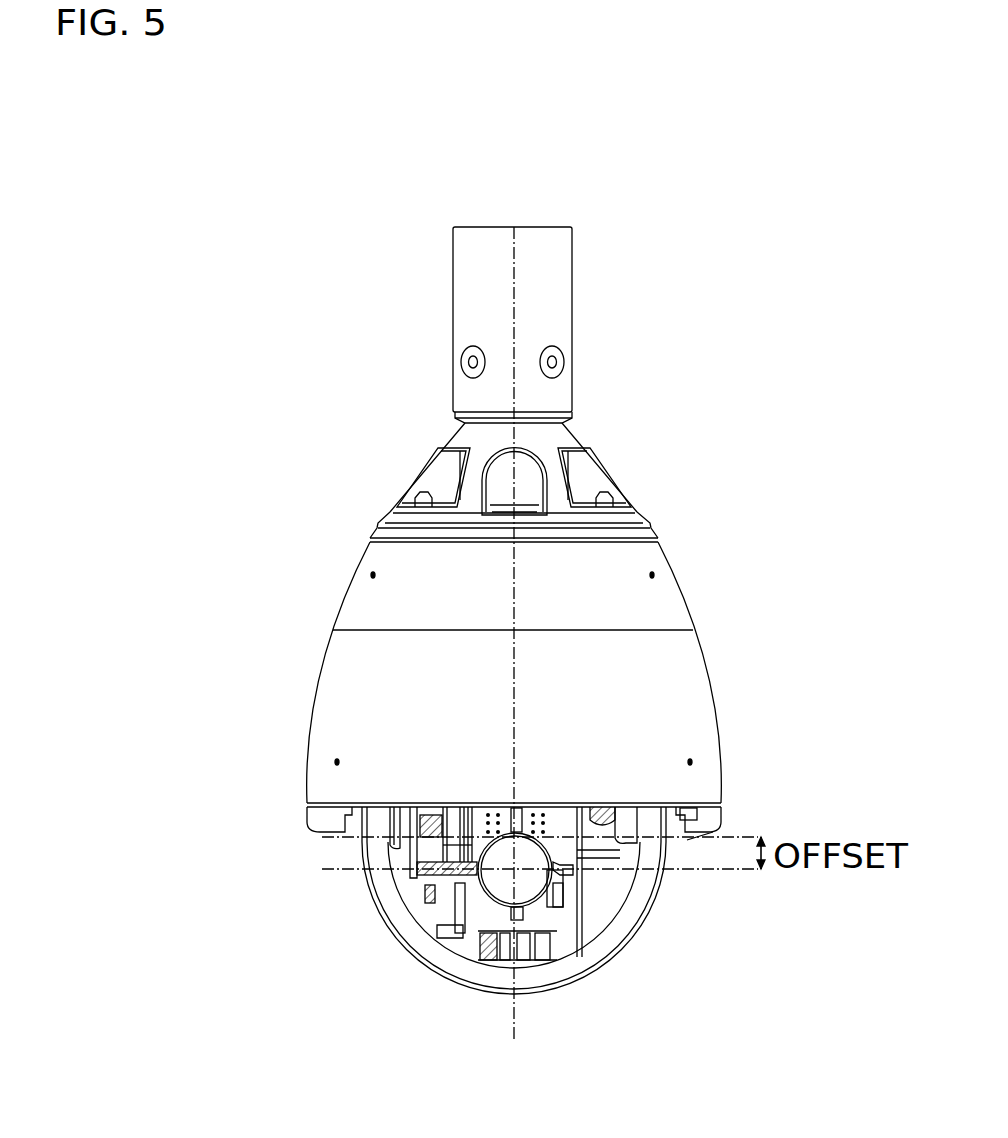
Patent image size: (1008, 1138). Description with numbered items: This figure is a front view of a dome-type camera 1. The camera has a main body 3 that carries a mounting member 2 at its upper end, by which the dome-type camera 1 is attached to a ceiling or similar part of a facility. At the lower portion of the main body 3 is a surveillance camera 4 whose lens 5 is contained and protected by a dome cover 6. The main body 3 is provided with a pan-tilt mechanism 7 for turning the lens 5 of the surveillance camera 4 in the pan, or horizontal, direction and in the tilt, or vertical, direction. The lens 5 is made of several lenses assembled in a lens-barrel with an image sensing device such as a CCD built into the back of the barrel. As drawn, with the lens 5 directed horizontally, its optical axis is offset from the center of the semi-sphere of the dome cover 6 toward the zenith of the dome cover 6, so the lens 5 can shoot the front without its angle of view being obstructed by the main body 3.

The dome-type camera 1 is at (678, 414).
The mounting member 2 is at (468, 292).
The main body 3 is at (336, 674).
The surveillance camera 4 is at (440, 910).
The lens 5 is at (507, 893).
The dome cover 6 is at (380, 912).
The pan-tilt mechanism 7 is at (414, 872).